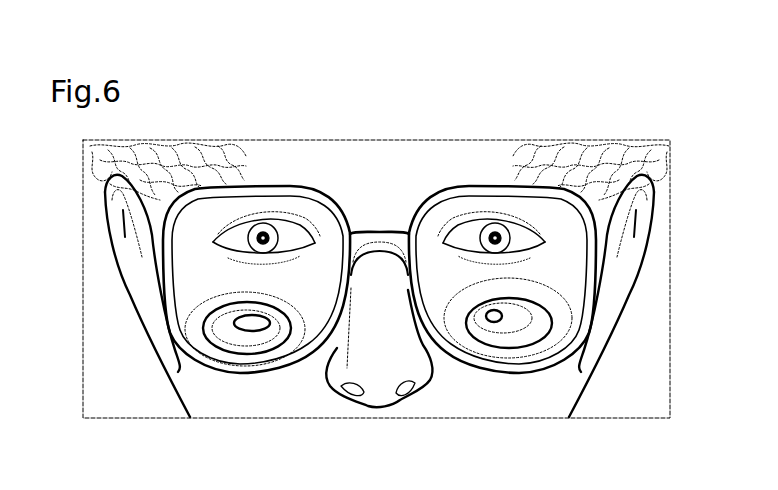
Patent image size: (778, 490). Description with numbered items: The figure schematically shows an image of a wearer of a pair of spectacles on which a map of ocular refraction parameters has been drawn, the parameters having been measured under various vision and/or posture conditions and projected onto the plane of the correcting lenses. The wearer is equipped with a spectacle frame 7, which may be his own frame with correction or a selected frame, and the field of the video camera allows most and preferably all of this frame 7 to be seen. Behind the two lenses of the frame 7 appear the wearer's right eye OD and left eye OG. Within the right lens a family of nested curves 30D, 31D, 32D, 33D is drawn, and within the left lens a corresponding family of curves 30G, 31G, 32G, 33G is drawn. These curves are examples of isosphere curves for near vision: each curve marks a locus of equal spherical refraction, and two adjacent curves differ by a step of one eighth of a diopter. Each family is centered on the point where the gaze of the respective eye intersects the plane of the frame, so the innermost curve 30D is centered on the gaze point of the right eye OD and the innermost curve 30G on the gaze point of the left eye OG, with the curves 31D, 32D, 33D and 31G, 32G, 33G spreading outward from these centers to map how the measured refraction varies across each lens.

The spectacle frame 7 is at (447, 194).
The right eye OD is at (263, 232).
The left eye OG is at (468, 240).
The isosphere curve 30D is at (252, 331).
The isosphere curve 31D is at (218, 333).
The isosphere curve 32D is at (207, 318).
The isosphere curve 33D is at (209, 292).
The isosphere curve 30G is at (494, 322).
The isosphere curve 31G is at (535, 325).
The isosphere curve 32G is at (550, 312).
The isosphere curve 33G is at (546, 292).